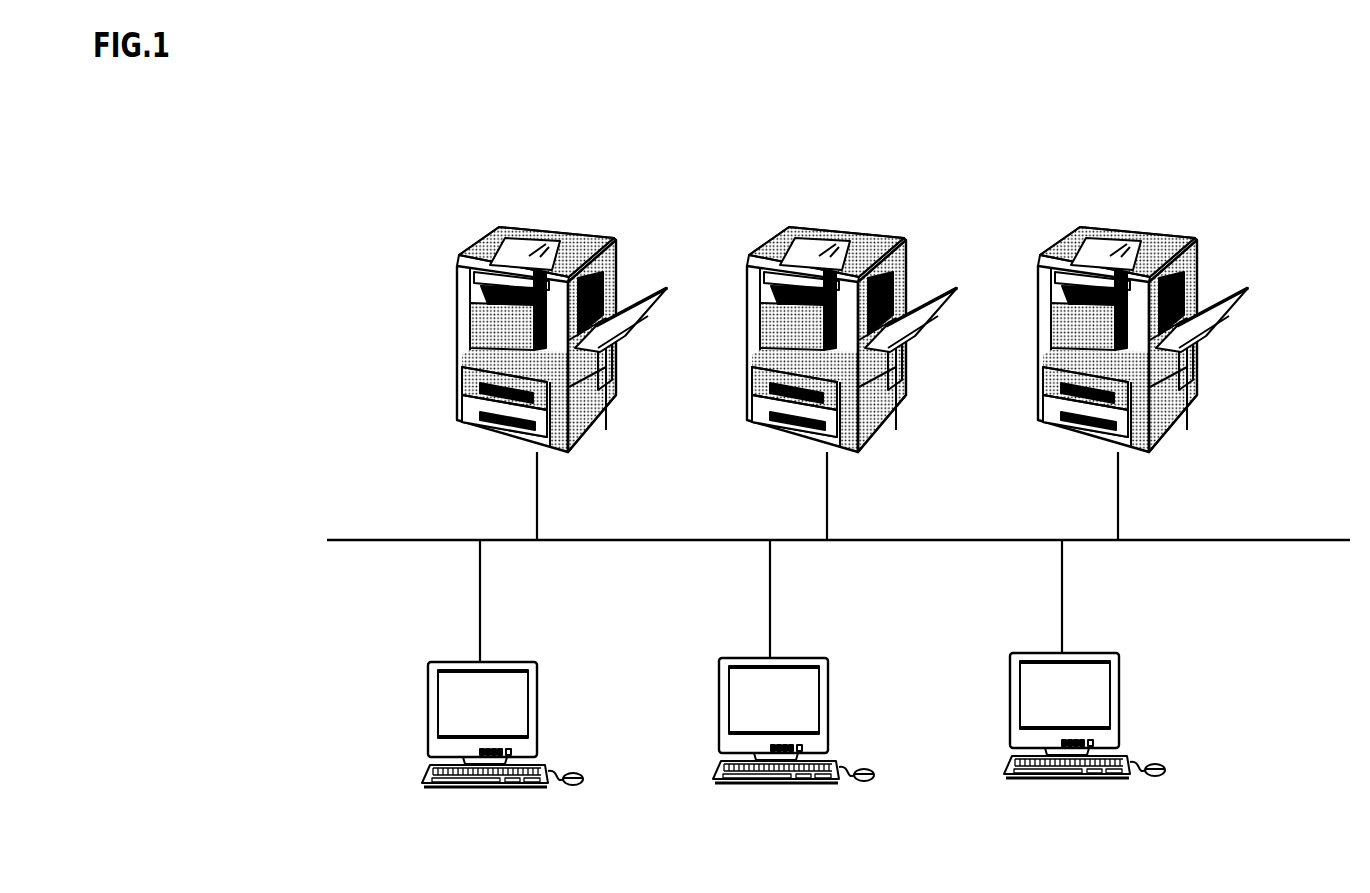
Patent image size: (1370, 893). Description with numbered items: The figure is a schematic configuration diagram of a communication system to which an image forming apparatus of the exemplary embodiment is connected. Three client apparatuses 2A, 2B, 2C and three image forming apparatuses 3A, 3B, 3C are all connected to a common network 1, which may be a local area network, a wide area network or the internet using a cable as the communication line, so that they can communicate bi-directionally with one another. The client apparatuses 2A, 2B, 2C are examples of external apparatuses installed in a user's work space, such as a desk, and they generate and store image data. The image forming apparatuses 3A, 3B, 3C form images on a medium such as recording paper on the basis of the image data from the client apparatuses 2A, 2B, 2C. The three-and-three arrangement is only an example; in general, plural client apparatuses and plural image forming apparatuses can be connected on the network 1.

The network 1 is at (1312, 540).
The client apparatus 2A is at (517, 661).
The client apparatus 2B is at (812, 657).
The client apparatus 2C is at (1093, 652).
The image forming apparatus 3A is at (532, 232).
The image forming apparatus 3B is at (821, 232).
The image forming apparatus 3C is at (1112, 231).